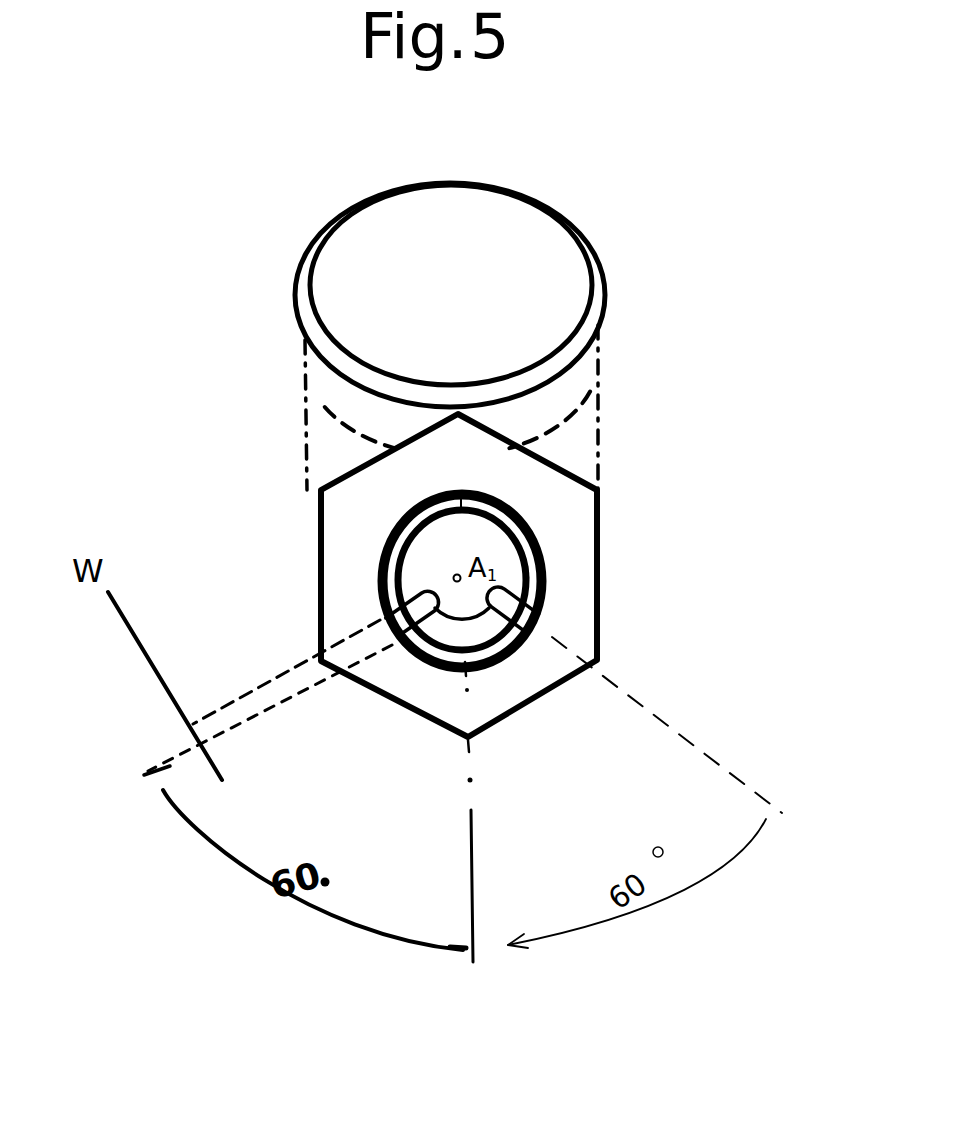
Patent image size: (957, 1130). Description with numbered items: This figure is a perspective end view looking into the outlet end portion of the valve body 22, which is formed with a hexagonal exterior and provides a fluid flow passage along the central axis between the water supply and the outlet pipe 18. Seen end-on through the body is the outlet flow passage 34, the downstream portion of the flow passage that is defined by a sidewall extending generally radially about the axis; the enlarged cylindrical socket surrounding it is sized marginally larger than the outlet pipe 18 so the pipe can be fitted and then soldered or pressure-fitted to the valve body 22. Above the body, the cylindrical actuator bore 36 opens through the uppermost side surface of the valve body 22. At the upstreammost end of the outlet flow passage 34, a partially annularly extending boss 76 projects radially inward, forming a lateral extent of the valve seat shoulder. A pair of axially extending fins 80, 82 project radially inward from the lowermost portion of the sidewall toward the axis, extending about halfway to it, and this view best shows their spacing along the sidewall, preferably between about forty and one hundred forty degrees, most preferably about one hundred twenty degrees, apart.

The outlet pipe 18 is at (590, 612).
The valve body 22 is at (584, 521).
The outlet flow passage 34 is at (492, 536).
The actuator bore 36 is at (538, 262).
The boss 76 is at (443, 668).
The fin 80 is at (380, 573).
The fin 82 is at (543, 577).